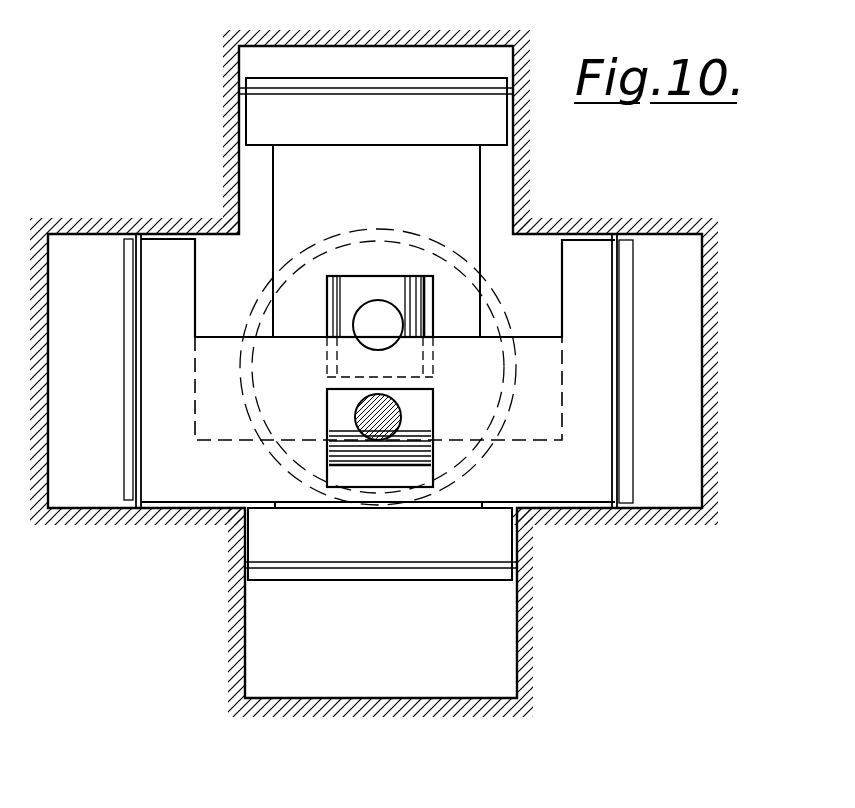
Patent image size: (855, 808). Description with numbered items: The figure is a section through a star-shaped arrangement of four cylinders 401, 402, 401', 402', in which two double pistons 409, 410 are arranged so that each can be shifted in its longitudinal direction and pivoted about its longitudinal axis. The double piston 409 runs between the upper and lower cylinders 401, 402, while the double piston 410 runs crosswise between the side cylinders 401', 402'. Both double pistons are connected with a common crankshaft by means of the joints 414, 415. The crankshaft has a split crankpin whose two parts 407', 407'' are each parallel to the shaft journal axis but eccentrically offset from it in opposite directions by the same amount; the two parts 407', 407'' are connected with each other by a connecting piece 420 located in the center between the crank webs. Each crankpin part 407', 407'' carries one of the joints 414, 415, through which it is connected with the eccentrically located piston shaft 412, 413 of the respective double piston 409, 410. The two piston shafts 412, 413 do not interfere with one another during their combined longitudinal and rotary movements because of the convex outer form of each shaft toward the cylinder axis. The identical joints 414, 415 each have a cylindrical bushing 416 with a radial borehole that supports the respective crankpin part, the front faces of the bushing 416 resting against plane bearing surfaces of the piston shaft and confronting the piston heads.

The cylinder 401 is at (376, 118).
The cylinder 401' is at (137, 347).
The cylinder 402 is at (380, 634).
The cylinder 402' is at (618, 347).
The crankpin part 407' is at (338, 318).
The crankpin part 407'' is at (428, 409).
The double piston 409 is at (319, 82).
The double piston 410 is at (145, 322).
The piston shaft 412 is at (470, 173).
The piston shaft 413 is at (224, 353).
The joint 414 is at (434, 301).
The joint 415 is at (355, 474).
The cylindrical bushing 416 is at (376, 283).
The connecting piece 420 is at (397, 365).